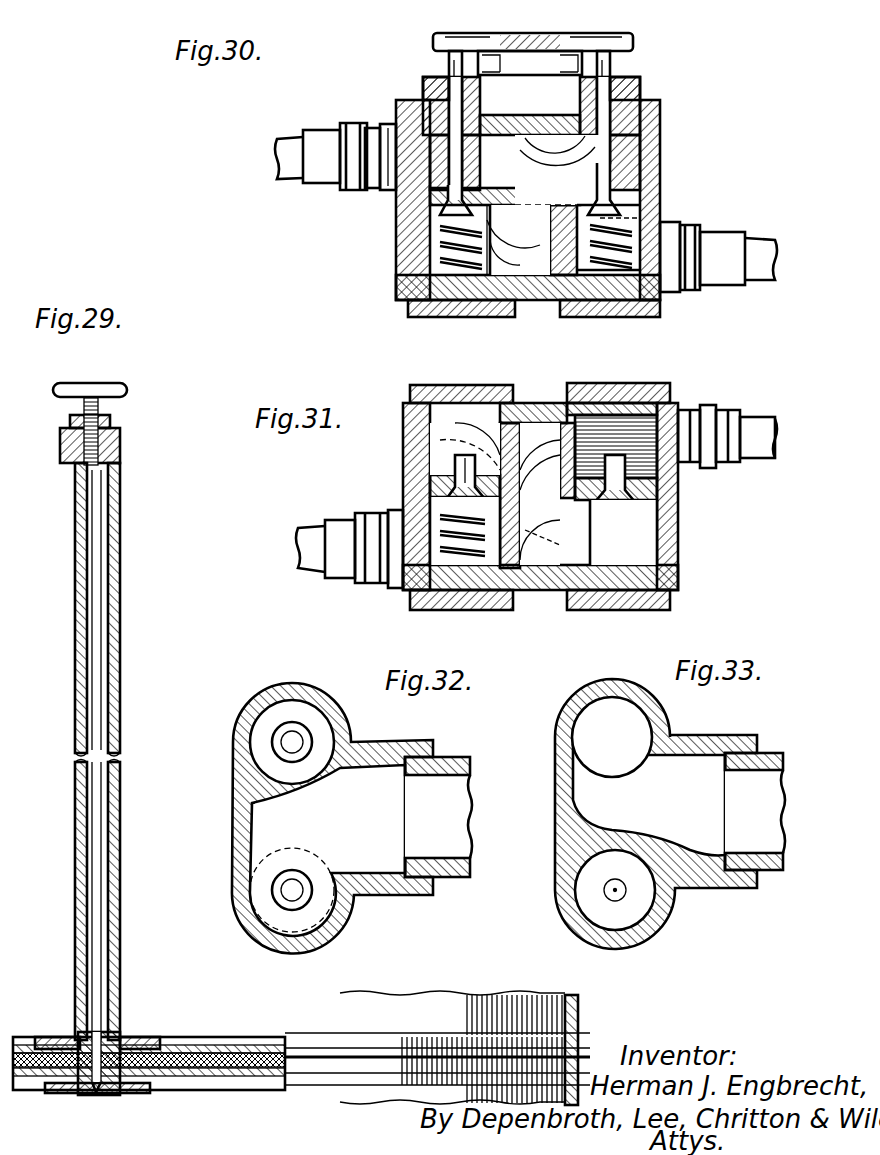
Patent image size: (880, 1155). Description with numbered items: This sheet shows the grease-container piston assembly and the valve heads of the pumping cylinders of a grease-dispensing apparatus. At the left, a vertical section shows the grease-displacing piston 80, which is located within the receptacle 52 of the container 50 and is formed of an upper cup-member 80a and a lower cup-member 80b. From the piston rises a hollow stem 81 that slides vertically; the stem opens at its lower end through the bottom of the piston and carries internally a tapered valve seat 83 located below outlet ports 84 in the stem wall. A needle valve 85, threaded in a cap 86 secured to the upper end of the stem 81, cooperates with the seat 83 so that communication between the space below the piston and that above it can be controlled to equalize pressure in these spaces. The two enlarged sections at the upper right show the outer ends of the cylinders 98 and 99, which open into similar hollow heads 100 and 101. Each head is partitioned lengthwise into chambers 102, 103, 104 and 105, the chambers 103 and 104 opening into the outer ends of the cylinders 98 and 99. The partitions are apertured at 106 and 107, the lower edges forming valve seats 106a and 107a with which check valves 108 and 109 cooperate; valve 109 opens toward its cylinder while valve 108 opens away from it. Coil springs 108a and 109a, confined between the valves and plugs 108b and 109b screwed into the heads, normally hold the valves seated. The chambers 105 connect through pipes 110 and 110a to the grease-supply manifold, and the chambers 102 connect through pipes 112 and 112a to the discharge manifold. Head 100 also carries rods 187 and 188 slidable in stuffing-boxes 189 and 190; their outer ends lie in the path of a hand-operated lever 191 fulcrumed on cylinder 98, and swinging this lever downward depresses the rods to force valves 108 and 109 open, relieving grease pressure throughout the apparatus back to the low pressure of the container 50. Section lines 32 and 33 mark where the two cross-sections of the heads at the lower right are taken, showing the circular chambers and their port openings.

In FIG. 29, the container 50 is at (565, 1003).
In FIG. 29, the receptacle 52 is at (578, 1025).
In FIG. 29, the grease-displacing piston 80 is at (195, 1080).
In FIG. 29, the upper cup-member 80a is at (230, 1045).
In FIG. 29, the lower cup-member 80b is at (248, 1080).
In FIG. 29, the stem 81 is at (75, 913).
In FIG. 29, the tapered valve seat 83 is at (110, 1097).
In FIG. 29, the outlet ports 84 is at (80, 1040).
In FIG. 29, the needle valve 85 is at (95, 1094).
In FIG. 29, the cap 86 is at (120, 425).
In FIG. 30, the cylinder 98 is at (530, 303).
In FIG. 32, the cylinder 98 is at (455, 758).
In FIG. 33, the cylinder 98 is at (768, 872).
In FIG. 31, the cylinder 99 is at (540, 570).
In FIG. 30, the hollow head 100 is at (532, 115).
In FIG. 31, the hollow head 100 is at (540, 496).
In FIG. 32, the hollow head 100 is at (245, 795).
In FIG. 33, the hollow head 100 is at (572, 842).
In FIG. 31, the hollow head 101 is at (540, 403).
In FIG. 30, the chamber 102 is at (582, 300).
In FIG. 31, the chamber 102 is at (425, 570).
In FIG. 33, the chamber 102 is at (585, 893).
In FIG. 30, the chamber 103 is at (668, 128).
In FIG. 31, the chamber 103 is at (455, 400).
In FIG. 32, the chamber 103 is at (270, 838).
In FIG. 30, the chamber 104 is at (465, 260).
In FIG. 31, the chamber 104 is at (560, 565).
In FIG. 33, the chamber 104 is at (600, 805).
In FIG. 30, the chamber 105 is at (390, 130).
In FIG. 31, the chamber 105 is at (640, 395).
In FIG. 30, the aperture 106 is at (645, 150).
In FIG. 31, the aperture 106 is at (660, 478).
In FIG. 32, the aperture 106 is at (278, 888).
In FIG. 30, the valve seat 106a is at (650, 160).
In FIG. 31, the valve seat 106a is at (665, 485).
In FIG. 30, the aperture 107 is at (438, 208).
In FIG. 31, the aperture 107 is at (455, 480).
In FIG. 32, the aperture 107 is at (278, 742).
In FIG. 30, the valve seat 107a is at (440, 220).
In FIG. 31, the valve seat 107a is at (452, 500).
In FIG. 30, the check valve 108 is at (660, 208).
In FIG. 31, the check valve 108 is at (430, 507).
In FIG. 32, the check valve 108 is at (285, 895).
In FIG. 30, the coil spring 108a is at (640, 310).
In FIG. 31, the coil spring 108a is at (510, 595).
In FIG. 30, the plug 108b is at (660, 303).
In FIG. 31, the plug 108b is at (470, 595).
In FIG. 30, the check valve 109 is at (438, 248).
In FIG. 31, the check valve 109 is at (658, 520).
In FIG. 32, the check valve 109 is at (283, 746).
In FIG. 30, the coil spring 109a is at (475, 300).
In FIG. 31, the coil spring 109a is at (670, 570).
In FIG. 30, the plug 109b is at (425, 315).
In FIG. 31, the plug 109b is at (625, 605).
In FIG. 30, the pipe 110 is at (295, 142).
In FIG. 31, the pipe 110a is at (748, 428).
In FIG. 30, the pipe 112 is at (752, 280).
In FIG. 31, the pipe 112a is at (335, 565).
In FIG. 30, the rod 187 is at (448, 62).
In FIG. 30, the rod 188 is at (612, 62).
In FIG. 30, the stuffing-box 189 is at (428, 80).
In FIG. 30, the stuffing-box 190 is at (640, 85).
In FIG. 30, the hand-operated lever 191 is at (520, 32).
In FIG. 30, the section line 32 is at (718, 165).
In FIG. 30, the section line 33 is at (395, 210).